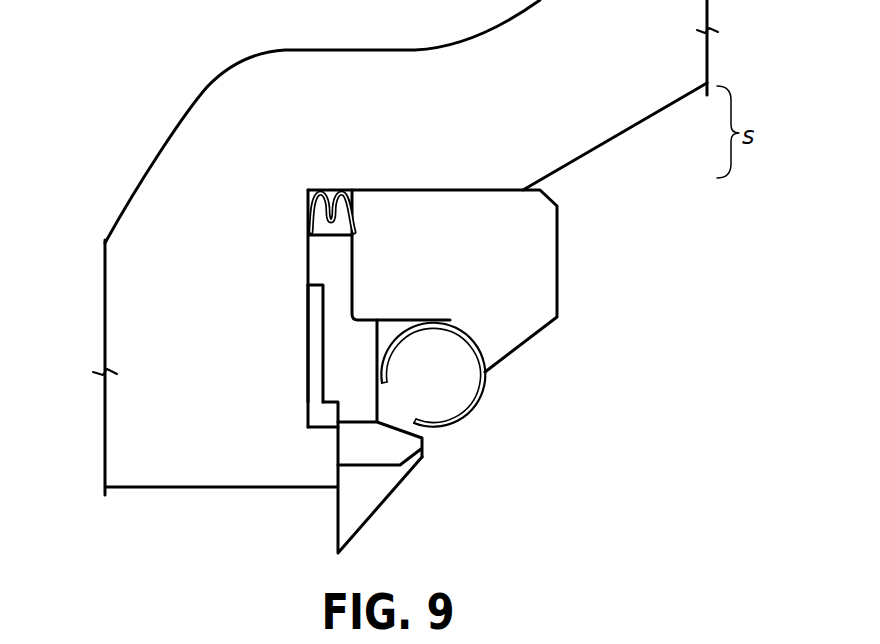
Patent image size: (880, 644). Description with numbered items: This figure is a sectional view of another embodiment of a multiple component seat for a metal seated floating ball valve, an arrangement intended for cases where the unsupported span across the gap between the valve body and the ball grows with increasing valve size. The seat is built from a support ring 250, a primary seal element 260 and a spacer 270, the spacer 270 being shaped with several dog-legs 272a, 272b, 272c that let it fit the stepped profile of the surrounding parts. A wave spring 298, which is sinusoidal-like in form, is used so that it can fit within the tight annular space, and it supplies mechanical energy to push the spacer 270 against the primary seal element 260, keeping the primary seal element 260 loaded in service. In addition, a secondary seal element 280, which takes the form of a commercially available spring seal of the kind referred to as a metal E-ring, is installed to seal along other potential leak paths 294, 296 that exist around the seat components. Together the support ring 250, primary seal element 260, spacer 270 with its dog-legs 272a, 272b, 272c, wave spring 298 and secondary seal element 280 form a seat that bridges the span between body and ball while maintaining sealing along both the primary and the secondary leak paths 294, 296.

The support ring 250 is at (485, 203).
The primary seal element 260 is at (307, 422).
The spacer 270 is at (325, 262).
The dog-leg 272a is at (312, 285).
The dog-leg 272b is at (375, 322).
The dog-leg 272c is at (336, 401).
The secondary seal element 280 is at (320, 190).
The potential leak path 294 is at (362, 190).
The potential leak path 296 is at (308, 227).
The wave spring 298 is at (322, 345).